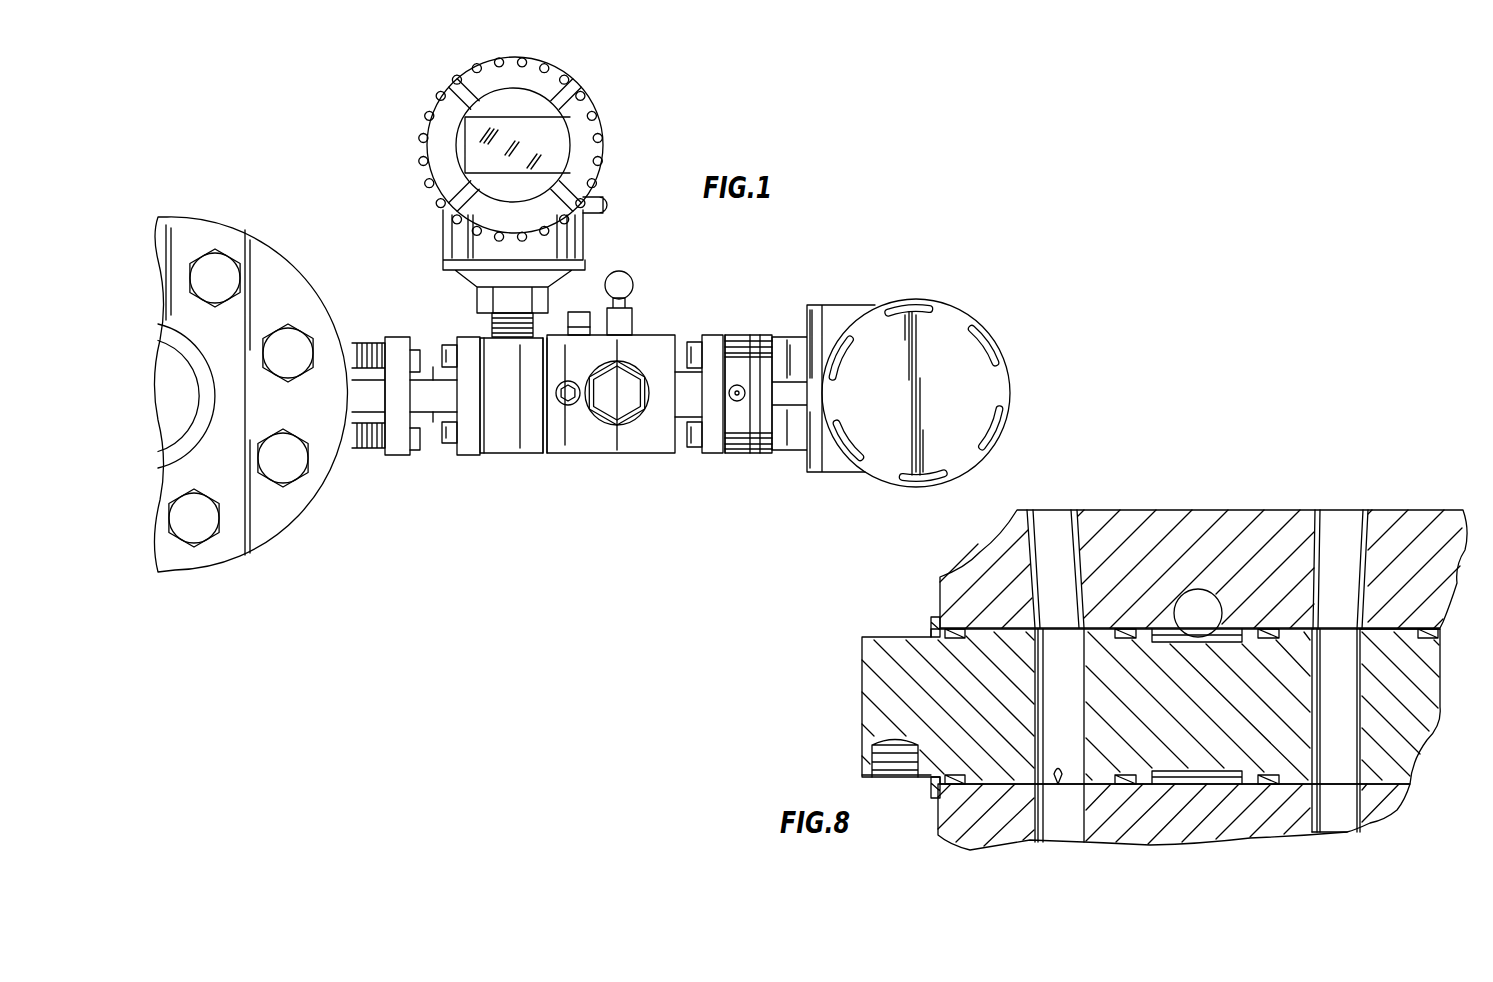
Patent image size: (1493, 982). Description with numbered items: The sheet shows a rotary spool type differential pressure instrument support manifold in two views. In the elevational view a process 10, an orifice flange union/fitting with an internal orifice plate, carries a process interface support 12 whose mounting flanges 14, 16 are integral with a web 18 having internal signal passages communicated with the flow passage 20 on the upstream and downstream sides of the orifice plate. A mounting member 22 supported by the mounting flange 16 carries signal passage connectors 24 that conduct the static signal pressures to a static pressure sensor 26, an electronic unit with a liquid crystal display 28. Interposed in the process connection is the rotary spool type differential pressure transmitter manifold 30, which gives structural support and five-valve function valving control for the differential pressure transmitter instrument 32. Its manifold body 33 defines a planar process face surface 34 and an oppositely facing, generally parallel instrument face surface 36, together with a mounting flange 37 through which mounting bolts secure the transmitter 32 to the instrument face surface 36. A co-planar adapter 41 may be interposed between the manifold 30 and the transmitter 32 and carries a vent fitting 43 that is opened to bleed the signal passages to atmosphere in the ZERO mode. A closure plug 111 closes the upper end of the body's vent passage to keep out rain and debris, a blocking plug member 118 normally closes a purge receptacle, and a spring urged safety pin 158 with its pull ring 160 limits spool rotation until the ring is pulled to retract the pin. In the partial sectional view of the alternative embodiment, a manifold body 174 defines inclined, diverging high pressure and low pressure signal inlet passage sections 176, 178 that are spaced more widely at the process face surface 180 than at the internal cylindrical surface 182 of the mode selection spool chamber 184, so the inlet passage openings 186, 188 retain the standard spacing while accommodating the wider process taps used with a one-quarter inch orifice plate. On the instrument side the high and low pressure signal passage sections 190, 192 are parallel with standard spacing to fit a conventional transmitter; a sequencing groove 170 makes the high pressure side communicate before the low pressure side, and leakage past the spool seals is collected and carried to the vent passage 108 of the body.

In FIG. 1, the process 10 is at (288, 520).
In FIG. 1, the process interface support 12 is at (432, 415).
In FIG. 1, the mounting flange 14 is at (398, 338).
In FIG. 1, the mounting flange 16 is at (465, 445).
In FIG. 1, the web 18 is at (428, 358).
In FIG. 1, the flow passage 20 is at (171, 405).
In FIG. 1, the mounting member 22 is at (510, 447).
In FIG. 1, the signal passage connectors 24 is at (508, 327).
In FIG. 1, the static pressure sensor 26 is at (427, 140).
In FIG. 1, the liquid crystal display 28 is at (555, 130).
In FIG. 1, the rotary spool type differential pressure transmitter manifold 30 is at (665, 459).
In FIG. 1, the differential pressure transmitter instrument 32 is at (865, 463).
In FIG. 1, the manifold body 33 is at (652, 343).
In FIG. 1, the process face surface 34 is at (537, 433).
In FIG. 1, the instrument face surface 36 is at (727, 362).
In FIG. 1, the mounting flange 37 is at (712, 340).
In FIG. 1, the co-planar adapter 41 is at (737, 447).
In FIG. 1, the vent fitting 43 is at (745, 400).
In FIG. 1, the closure plug 111 is at (580, 312).
In FIG. 1, the plug member 118 is at (572, 405).
In FIG. 1, the positioning control pin 158 is at (628, 300).
In FIG. 1, the pull ring 160 is at (632, 277).
In FIG. 8, the vent passage 108 is at (1200, 612).
In FIG. 8, the sequencing groove 170 is at (1060, 785).
In FIG. 8, the manifold body 174 is at (973, 825).
In FIG. 8, the high pressure signal inlet passage section 176 is at (1058, 508).
In FIG. 8, the low pressure signal inlet passage section 178 is at (1355, 511).
In FIG. 8, the process face surface 180 is at (1287, 511).
In FIG. 8, the internal cylindrical surface 182 is at (992, 630).
In FIG. 8, the mode selection spool chamber 184 is at (1405, 723).
In FIG. 8, the inlet passage opening 186 is at (1105, 622).
In FIG. 8, the inlet passage opening 188 is at (1365, 620).
In FIG. 8, the high pressure process signal passage section 190 is at (1057, 832).
In FIG. 8, the low pressure process signal passage section 192 is at (1340, 820).